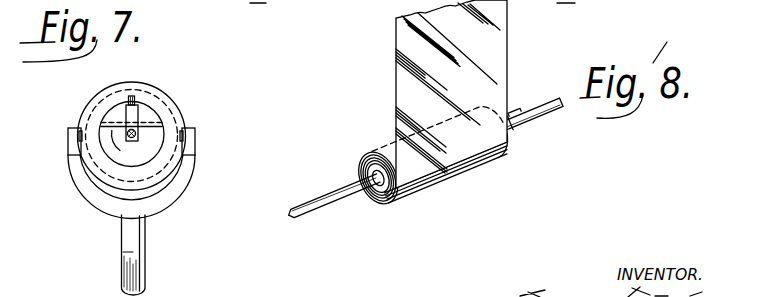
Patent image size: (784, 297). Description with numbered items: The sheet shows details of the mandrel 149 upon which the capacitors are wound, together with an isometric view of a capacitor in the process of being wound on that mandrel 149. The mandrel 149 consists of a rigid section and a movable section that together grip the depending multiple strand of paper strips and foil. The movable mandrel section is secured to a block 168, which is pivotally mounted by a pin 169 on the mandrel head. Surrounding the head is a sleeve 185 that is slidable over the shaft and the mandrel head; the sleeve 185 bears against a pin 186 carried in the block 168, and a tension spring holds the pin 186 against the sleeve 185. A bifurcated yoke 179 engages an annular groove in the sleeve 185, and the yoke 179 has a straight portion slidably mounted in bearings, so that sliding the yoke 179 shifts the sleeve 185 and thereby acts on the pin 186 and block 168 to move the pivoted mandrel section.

In FIG. 7, the mandrel 149 is at (148, 142).
In FIG. 8, the mandrel 149 is at (352, 204).
In FIG. 7, the block 168 is at (127, 113).
In FIG. 7, the pin 169 is at (113, 135).
In FIG. 7, the yoke 179 is at (170, 193).
In FIG. 7, the sleeve 185 is at (181, 113).
In FIG. 7, the pin 186 is at (138, 100).